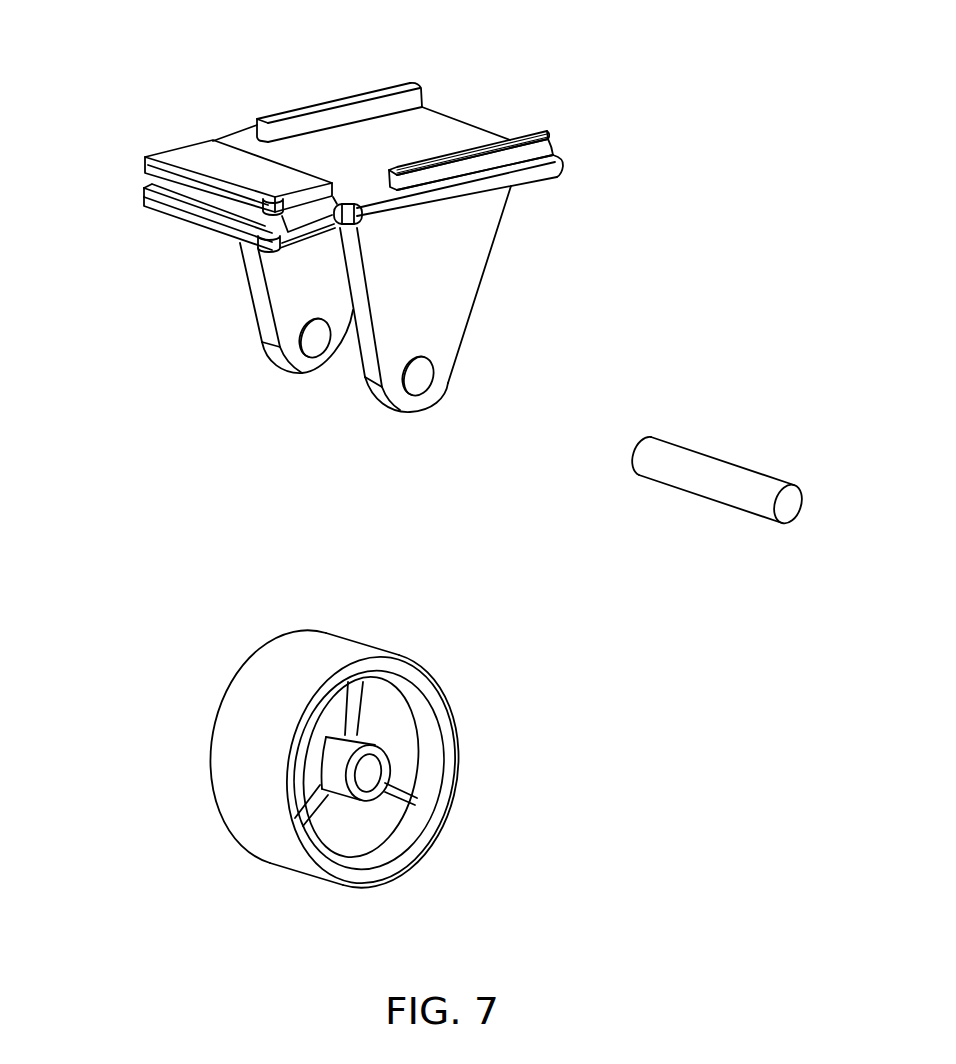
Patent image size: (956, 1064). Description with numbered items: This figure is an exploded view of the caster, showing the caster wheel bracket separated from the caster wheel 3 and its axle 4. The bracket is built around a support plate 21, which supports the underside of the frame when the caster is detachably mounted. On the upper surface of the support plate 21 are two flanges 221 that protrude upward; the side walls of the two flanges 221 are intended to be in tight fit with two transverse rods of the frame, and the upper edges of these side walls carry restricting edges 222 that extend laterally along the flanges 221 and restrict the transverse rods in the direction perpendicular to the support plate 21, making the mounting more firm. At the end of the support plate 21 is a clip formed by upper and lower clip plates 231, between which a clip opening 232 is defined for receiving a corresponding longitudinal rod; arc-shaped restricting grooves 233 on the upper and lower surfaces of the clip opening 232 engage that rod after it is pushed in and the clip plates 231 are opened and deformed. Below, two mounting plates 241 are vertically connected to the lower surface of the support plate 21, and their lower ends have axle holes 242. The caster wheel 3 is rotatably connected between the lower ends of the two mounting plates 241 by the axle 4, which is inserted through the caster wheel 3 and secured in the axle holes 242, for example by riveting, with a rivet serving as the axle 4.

The support plate 21 is at (560, 177).
The flanges 221 is at (540, 152).
The restricting edges 222 is at (547, 137).
The clip plates 231 is at (182, 148).
The clip opening 232 is at (160, 200).
The restricting grooves 233 is at (236, 216).
The mounting plates 241 is at (477, 299).
The axle holes 242 is at (430, 371).
The caster wheel 3 is at (253, 728).
The axle 4 is at (742, 490).